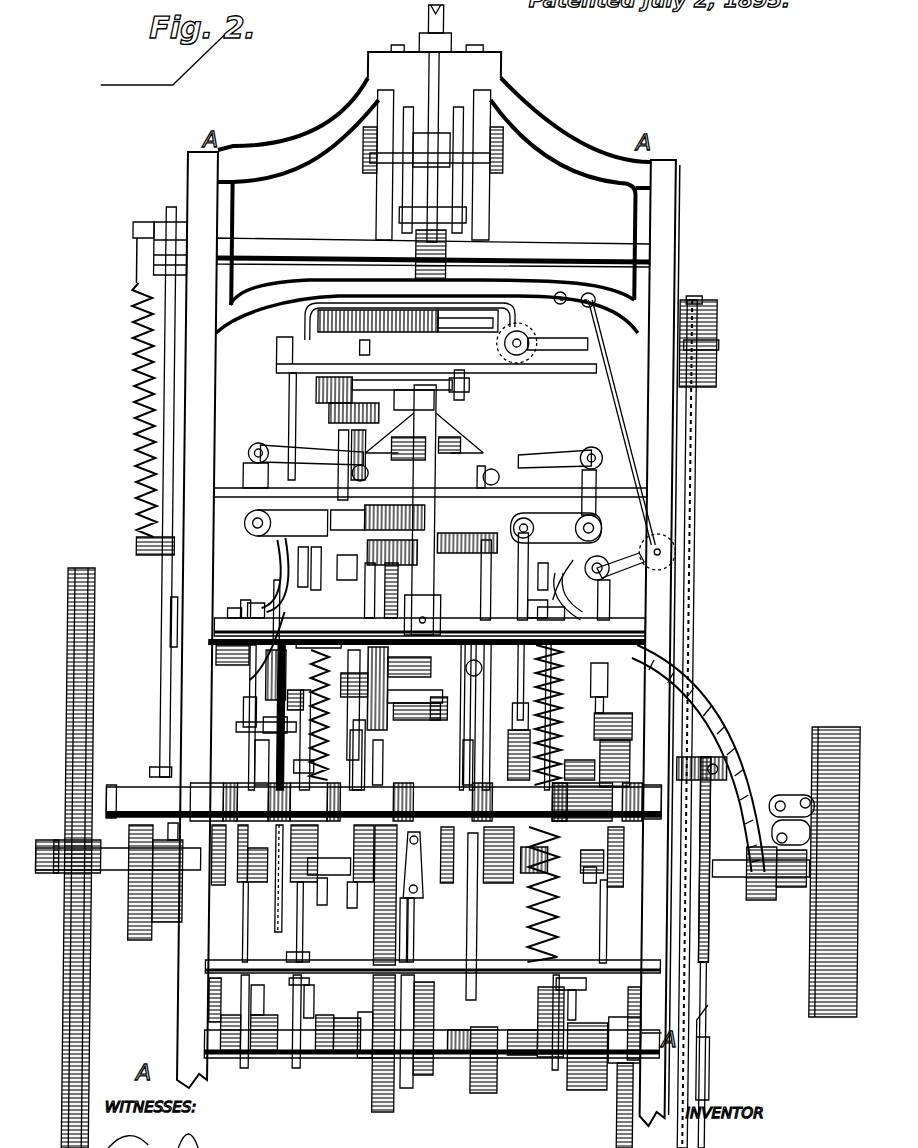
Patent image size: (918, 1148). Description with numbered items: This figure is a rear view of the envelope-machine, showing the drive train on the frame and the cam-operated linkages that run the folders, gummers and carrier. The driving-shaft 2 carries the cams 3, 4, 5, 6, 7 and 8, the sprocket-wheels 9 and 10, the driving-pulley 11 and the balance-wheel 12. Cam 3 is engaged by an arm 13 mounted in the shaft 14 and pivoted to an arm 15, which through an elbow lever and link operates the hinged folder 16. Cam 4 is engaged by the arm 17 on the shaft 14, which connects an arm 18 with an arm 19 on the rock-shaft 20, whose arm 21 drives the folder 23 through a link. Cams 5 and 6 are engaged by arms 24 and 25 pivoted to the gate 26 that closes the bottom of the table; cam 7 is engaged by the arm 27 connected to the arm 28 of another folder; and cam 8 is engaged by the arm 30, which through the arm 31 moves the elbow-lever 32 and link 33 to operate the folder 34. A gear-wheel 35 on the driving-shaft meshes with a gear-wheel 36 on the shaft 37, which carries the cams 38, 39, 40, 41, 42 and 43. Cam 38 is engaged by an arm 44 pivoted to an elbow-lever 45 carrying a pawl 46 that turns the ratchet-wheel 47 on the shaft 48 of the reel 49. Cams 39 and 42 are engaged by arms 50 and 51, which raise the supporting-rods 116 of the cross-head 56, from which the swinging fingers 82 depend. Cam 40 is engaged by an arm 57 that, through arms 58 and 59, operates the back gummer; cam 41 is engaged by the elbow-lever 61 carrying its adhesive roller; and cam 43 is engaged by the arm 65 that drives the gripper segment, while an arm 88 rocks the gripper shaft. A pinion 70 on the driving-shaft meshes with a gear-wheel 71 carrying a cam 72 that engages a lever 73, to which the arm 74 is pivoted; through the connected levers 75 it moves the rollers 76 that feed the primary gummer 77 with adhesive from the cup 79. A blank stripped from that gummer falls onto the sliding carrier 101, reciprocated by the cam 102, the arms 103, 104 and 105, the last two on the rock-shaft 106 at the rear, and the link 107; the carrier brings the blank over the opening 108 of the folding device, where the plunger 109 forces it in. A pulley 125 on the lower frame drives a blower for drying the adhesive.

The driving-shaft 2 is at (119, 871).
The cam 3 is at (243, 878).
The cam 4 is at (343, 857).
The cam 5 is at (358, 875).
The cam 6 is at (472, 885).
The cam 7 is at (506, 885).
The cam 8 is at (540, 887).
The sprocket-wheel 9 is at (274, 933).
The sprocket-wheel 10 is at (692, 1041).
The driving-pulley 11 is at (814, 862).
The balance-wheel 12 is at (85, 858).
The arm 13 is at (250, 726).
The shaft 14 is at (138, 786).
The arm 15 is at (282, 452).
The hinged folder 16 is at (342, 442).
The arm 17 is at (299, 740).
The arm 18 is at (316, 607).
The arm 19 is at (314, 526).
The rock-shaft 20 is at (378, 515).
The arm 21 is at (392, 550).
The folder 23 is at (414, 442).
The arm 24 is at (372, 597).
The arm 25 is at (520, 585).
The gate 26 is at (476, 576).
The arm 27 is at (522, 778).
The arm 28 is at (524, 700).
The arm 30 is at (586, 765).
The arm 31 is at (518, 610).
The elbow-lever 32 is at (600, 470).
The link 33 is at (592, 446).
The folder 34 is at (502, 470).
The gear-wheel 35 is at (383, 930).
The gear-wheel 36 is at (381, 1056).
The shaft 37 is at (527, 1058).
The cam 38 is at (259, 1030).
The cam 39 is at (358, 1078).
The cam 40 is at (436, 1076).
The cam 41 is at (472, 1074).
The cam 42 is at (548, 1022).
The cam 43 is at (592, 1065).
The arm 44 is at (285, 685).
The elbow-lever 45 is at (268, 603).
The pawl 46 is at (258, 604).
The ratchet-wheel 47 is at (229, 602).
The shaft 48 is at (330, 660).
The reel 49 is at (497, 668).
The arm 50 is at (308, 922).
The arm 51 is at (573, 1022).
The cross-head 56 is at (338, 572).
The arm 57 is at (423, 946).
The arm 58 is at (432, 882).
The arm 59 is at (434, 720).
The elbow-lever 61 is at (503, 948).
The arm 65 is at (612, 958).
The pinion 70 is at (609, 890).
The gear-wheel 71 is at (640, 750).
The cam 72 is at (640, 780).
The lever 73 is at (616, 712).
The arm 74 is at (605, 600).
The levers 75 is at (625, 388).
The rollers 76 is at (322, 332).
The primary gummer 77 is at (397, 318).
The cup 79 is at (570, 372).
The swinging fingers 82 is at (432, 570).
The arm 88 is at (370, 998).
The sliding carrier 101 is at (410, 378).
The cam 102 is at (588, 802).
The arm 103 is at (655, 652).
The arm 104 is at (575, 596).
The arm 105 is at (447, 432).
The rock-shaft 106 is at (186, 600).
The link 107 is at (459, 376).
The opening 108 is at (347, 405).
The plunger 109 is at (448, 318).
The supporting-rods 116 is at (551, 600).
The pulley 125 is at (608, 1067).